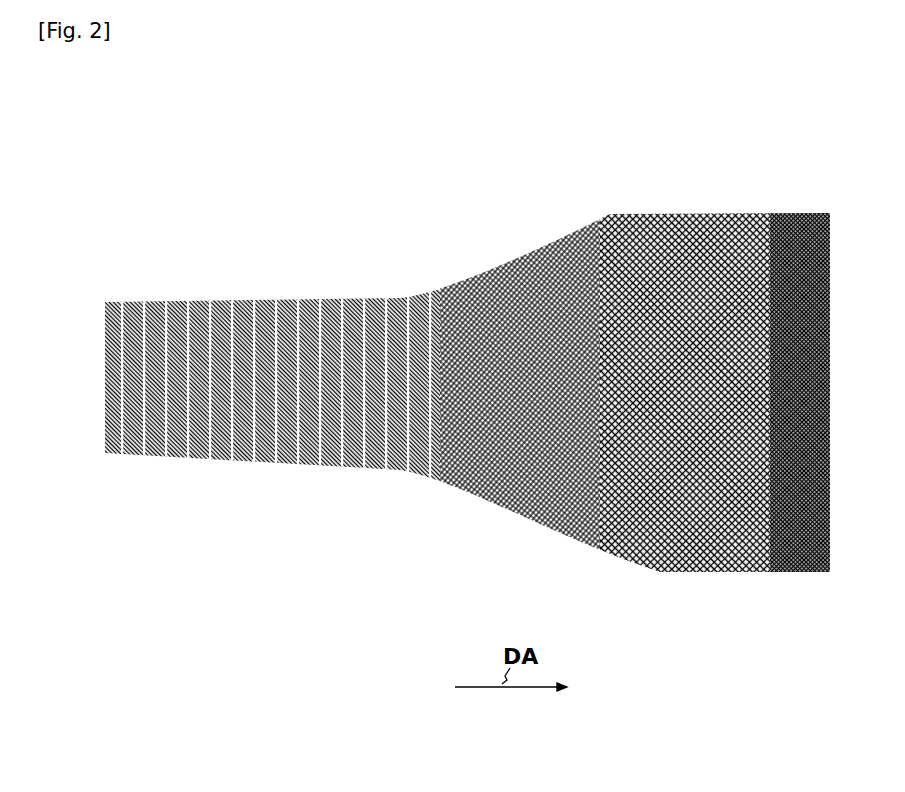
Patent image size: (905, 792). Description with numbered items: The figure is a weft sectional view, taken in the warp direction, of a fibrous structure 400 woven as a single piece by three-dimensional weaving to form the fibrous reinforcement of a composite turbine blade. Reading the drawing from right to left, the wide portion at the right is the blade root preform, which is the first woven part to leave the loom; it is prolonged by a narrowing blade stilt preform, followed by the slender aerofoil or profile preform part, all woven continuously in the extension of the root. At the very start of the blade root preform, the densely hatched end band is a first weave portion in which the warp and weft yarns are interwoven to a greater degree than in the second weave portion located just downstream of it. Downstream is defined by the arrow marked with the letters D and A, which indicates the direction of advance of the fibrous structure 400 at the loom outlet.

The fibrous structure 400 is at (468, 373).